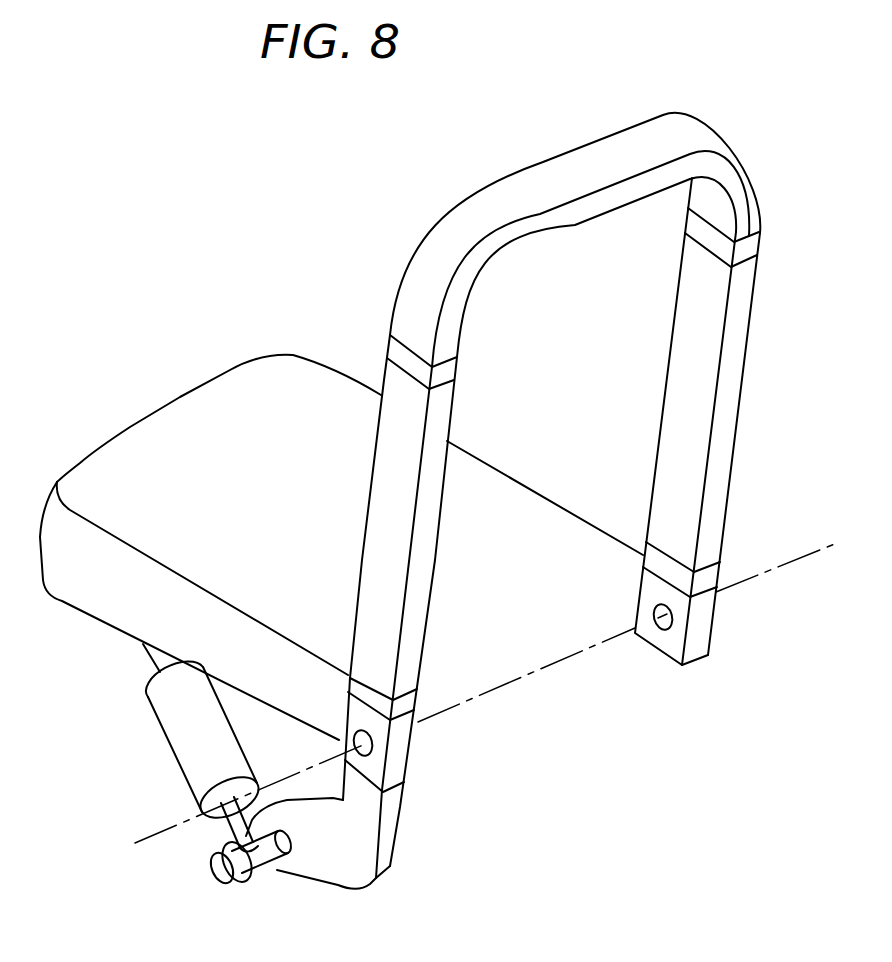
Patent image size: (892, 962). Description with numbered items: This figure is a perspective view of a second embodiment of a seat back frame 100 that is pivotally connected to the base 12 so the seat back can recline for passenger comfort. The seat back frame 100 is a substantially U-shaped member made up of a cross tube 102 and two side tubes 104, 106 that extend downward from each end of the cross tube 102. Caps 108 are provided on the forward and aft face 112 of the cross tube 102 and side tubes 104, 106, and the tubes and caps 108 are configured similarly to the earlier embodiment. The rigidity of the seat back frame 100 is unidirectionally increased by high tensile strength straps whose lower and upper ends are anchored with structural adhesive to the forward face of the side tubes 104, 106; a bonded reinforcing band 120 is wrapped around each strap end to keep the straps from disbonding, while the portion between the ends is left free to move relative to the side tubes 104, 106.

The base 12 is at (153, 408).
The seat back frame 100 is at (318, 268).
The cross tube 102 is at (568, 152).
The side tube 104 is at (375, 456).
The side tube 106 is at (738, 415).
The caps 108 is at (450, 420).
The aft face 112 is at (433, 498).
The reinforcing band 120 is at (456, 367).